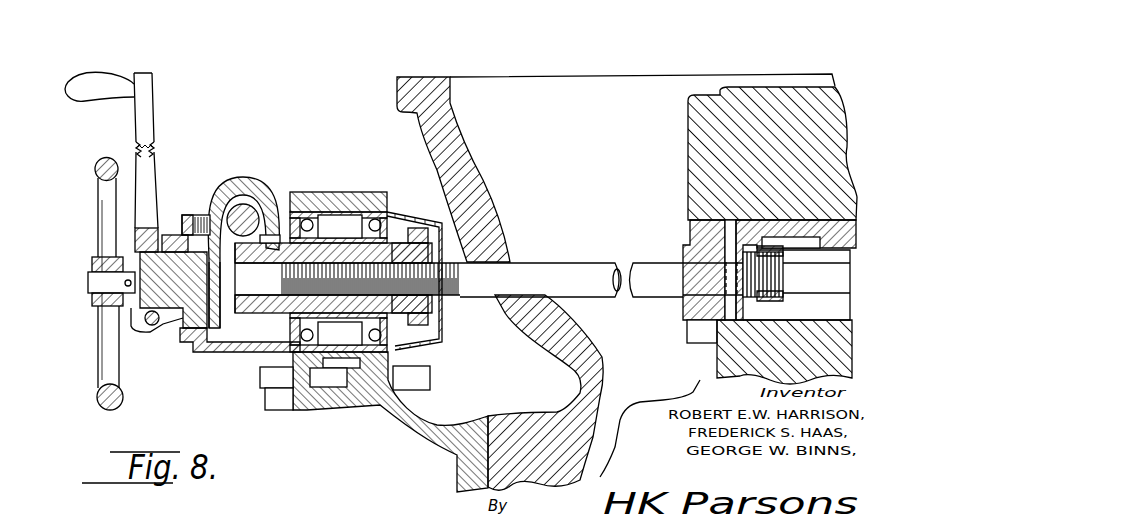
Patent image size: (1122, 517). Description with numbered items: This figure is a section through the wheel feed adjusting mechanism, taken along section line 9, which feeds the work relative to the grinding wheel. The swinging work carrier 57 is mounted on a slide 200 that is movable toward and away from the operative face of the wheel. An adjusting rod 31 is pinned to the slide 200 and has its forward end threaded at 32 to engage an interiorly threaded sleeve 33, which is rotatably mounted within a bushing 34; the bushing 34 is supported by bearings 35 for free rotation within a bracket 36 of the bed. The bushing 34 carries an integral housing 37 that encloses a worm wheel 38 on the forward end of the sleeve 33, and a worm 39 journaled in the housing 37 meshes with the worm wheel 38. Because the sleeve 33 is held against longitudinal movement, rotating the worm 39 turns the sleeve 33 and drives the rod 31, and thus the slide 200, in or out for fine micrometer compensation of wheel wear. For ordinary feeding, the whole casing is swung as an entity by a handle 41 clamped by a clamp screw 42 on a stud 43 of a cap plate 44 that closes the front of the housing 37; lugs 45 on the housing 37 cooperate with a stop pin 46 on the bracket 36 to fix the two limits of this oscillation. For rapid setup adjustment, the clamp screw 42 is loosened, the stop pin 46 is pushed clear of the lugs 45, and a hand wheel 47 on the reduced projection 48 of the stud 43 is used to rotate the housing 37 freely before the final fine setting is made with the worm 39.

The section line 9- 9 is at (249, 160).
The adjusting rod 31 is at (645, 277).
The threaded forward end 32 is at (375, 283).
The interiorly threaded sleeve 33 is at (340, 252).
The bushing 34 is at (335, 217).
The bearings 35 is at (390, 353).
The bracket 36 is at (415, 430).
The housing 37 is at (217, 188).
The worm wheel 38 is at (237, 330).
The worm 39 is at (252, 207).
The handle 41 is at (147, 122).
The clamp screw 42 is at (152, 325).
The stud 43 is at (140, 312).
The cap plate 44 is at (172, 234).
The lugs 45 is at (280, 402).
The stop pin 46 is at (263, 385).
The hand wheel 47 is at (102, 190).
The reduced projection 48 is at (100, 283).
The swinging work carrier 57 is at (744, 100).
The slide 200 is at (690, 313).